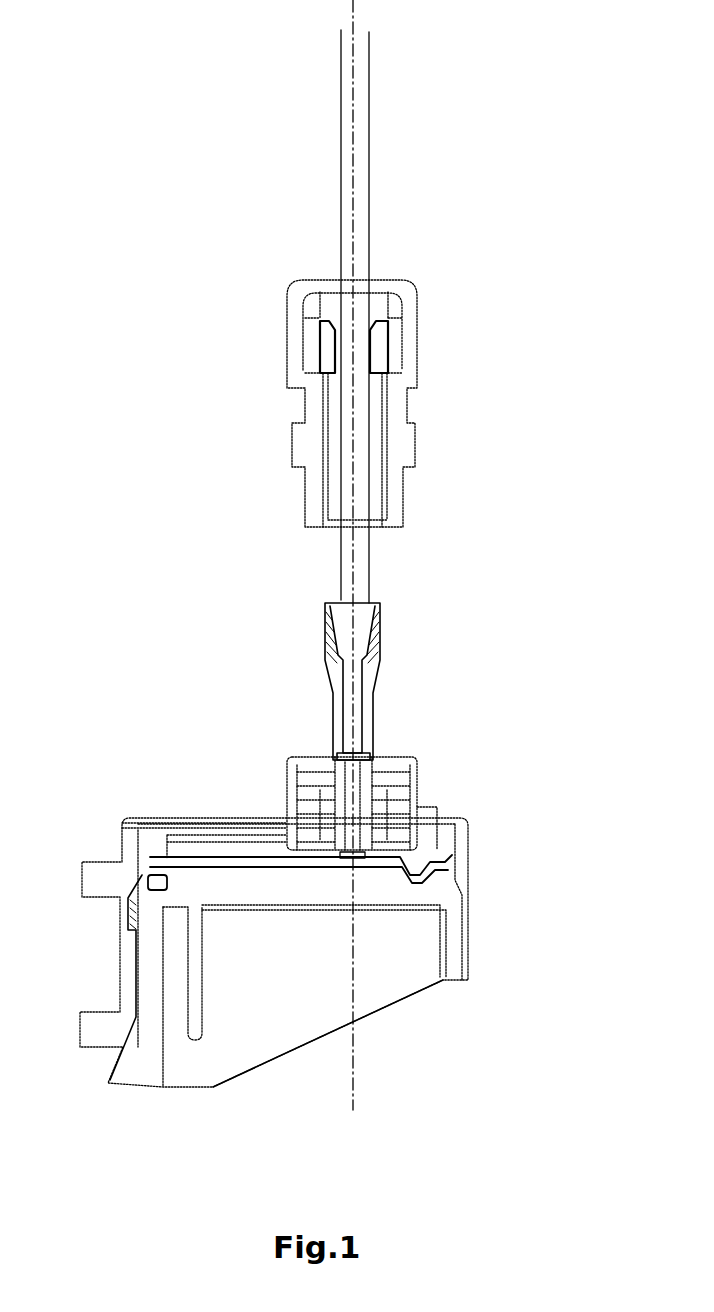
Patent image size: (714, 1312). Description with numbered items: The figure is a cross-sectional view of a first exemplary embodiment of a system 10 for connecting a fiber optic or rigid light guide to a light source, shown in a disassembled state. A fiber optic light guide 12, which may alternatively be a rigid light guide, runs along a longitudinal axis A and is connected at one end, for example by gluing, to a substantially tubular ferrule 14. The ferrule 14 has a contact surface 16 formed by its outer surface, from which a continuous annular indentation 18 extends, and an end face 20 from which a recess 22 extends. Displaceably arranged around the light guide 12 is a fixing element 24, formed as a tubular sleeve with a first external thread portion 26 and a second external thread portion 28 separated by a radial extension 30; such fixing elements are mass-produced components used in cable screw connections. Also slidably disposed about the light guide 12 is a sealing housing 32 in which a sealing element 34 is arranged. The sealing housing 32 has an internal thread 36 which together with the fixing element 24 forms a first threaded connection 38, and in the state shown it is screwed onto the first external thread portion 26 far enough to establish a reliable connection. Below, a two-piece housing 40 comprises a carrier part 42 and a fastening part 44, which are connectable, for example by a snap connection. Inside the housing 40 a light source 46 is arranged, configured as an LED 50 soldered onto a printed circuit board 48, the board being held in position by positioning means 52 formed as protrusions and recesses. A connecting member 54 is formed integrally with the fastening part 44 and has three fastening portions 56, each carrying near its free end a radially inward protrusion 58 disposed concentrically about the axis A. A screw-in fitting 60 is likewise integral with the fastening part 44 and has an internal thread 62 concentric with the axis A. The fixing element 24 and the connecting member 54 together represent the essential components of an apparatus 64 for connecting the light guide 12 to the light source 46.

The system 10 is at (172, 140).
The fiber optic light guide 12 is at (371, 130).
The ferrule 14 is at (430, 681).
The contact surface 16 is at (430, 681).
The annular indentation 18 is at (382, 630).
The end face 20 is at (374, 764).
The recess 22 is at (374, 764).
The fixing element 24 is at (424, 396).
The first external thread portion 26 is at (424, 396).
The second external thread portion 28 is at (424, 396).
The radial extension 30 is at (424, 396).
The sealing housing 32 is at (392, 300).
The sealing element 34 is at (380, 350).
The internal thread 36 is at (305, 360).
The first threaded connection 38 is at (275, 390).
The housing 40 is at (106, 725).
The carrier part 42 is at (418, 993).
The fastening part 44 is at (210, 870).
The light source 46 is at (391, 907).
The printed circuit board 48 is at (282, 894).
The LED 50 is at (353, 870).
The positioning means 52 is at (410, 860).
The connecting member 54 is at (374, 764).
The fastening portions 56 is at (374, 764).
The protrusion 58 is at (374, 764).
The screw-in fitting 60 is at (374, 764).
The internal thread 62 is at (380, 773).
The apparatus 64 is at (150, 545).
The longitudinal axis A is at (356, 3).